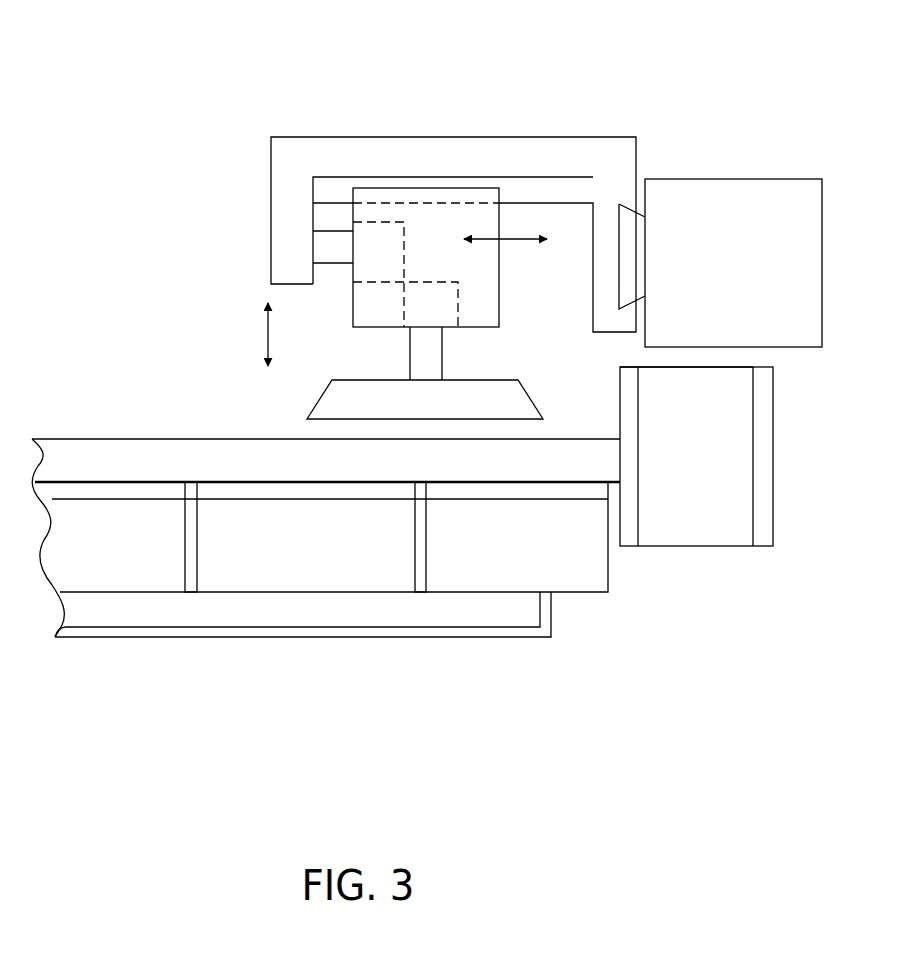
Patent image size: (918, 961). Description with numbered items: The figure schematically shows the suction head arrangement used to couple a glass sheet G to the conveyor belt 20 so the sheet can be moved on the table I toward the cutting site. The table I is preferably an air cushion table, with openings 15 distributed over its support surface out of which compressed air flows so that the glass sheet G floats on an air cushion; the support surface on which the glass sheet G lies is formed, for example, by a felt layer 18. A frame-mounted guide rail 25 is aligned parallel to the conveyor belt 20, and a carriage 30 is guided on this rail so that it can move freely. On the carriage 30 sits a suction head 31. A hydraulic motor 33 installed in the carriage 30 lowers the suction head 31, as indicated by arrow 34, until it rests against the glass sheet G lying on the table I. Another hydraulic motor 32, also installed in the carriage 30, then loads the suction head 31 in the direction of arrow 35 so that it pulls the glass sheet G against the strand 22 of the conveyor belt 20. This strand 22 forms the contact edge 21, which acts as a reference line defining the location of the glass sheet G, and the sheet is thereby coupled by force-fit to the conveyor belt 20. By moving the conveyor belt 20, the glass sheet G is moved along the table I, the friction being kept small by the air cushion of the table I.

The carriage 30 is at (458, 134).
The hydraulic motor 32 is at (370, 248).
The hydraulic motor 33 is at (428, 310).
The arrow 35 is at (508, 238).
The arrow 34 is at (258, 341).
The suction head 31 is at (459, 403).
The guide rail 25 is at (629, 243).
The conveyor belt 20 is at (719, 554).
The contact edge 21 is at (607, 403).
The strand 22 is at (627, 502).
The glass sheet G is at (193, 460).
The felt layer 18 is at (75, 490).
The openings 15 is at (190, 552).
The table I is at (72, 660).